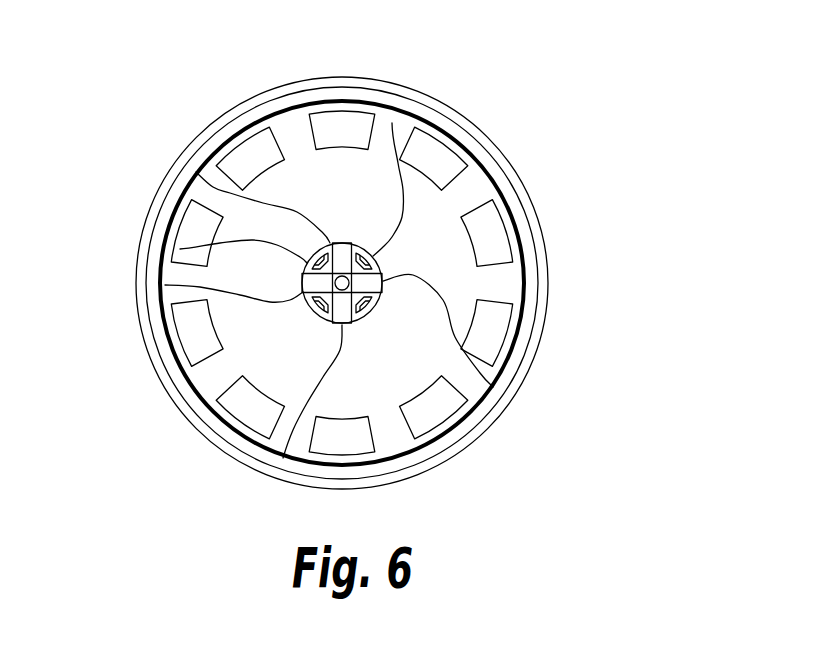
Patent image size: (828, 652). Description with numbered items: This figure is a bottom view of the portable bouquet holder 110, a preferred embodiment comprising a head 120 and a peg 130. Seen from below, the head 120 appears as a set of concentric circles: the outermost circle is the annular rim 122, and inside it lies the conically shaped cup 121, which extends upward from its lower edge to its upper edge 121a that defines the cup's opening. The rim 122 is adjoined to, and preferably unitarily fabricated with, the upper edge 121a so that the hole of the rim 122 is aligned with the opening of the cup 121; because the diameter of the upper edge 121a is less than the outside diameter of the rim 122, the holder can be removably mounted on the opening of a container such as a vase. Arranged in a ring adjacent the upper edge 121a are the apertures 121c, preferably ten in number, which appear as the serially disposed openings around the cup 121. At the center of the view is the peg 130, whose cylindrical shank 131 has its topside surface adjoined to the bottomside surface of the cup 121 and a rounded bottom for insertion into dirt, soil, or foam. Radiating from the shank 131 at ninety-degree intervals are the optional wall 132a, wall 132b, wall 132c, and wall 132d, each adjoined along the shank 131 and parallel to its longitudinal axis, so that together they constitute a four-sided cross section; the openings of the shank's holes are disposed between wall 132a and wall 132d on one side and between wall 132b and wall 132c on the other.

The portable bouquet holder 110 is at (597, 157).
The head 120 is at (574, 268).
The cup 121 is at (352, 204).
The upper edge 121a is at (180, 249).
The aperture 121c is at (337, 123).
The rim 122 is at (468, 95).
The peg 130 is at (303, 312).
The shank 131 is at (392, 123).
The wall 132a is at (213, 187).
The wall 132b is at (493, 387).
The wall 132c is at (283, 458).
The wall 132d is at (165, 285).